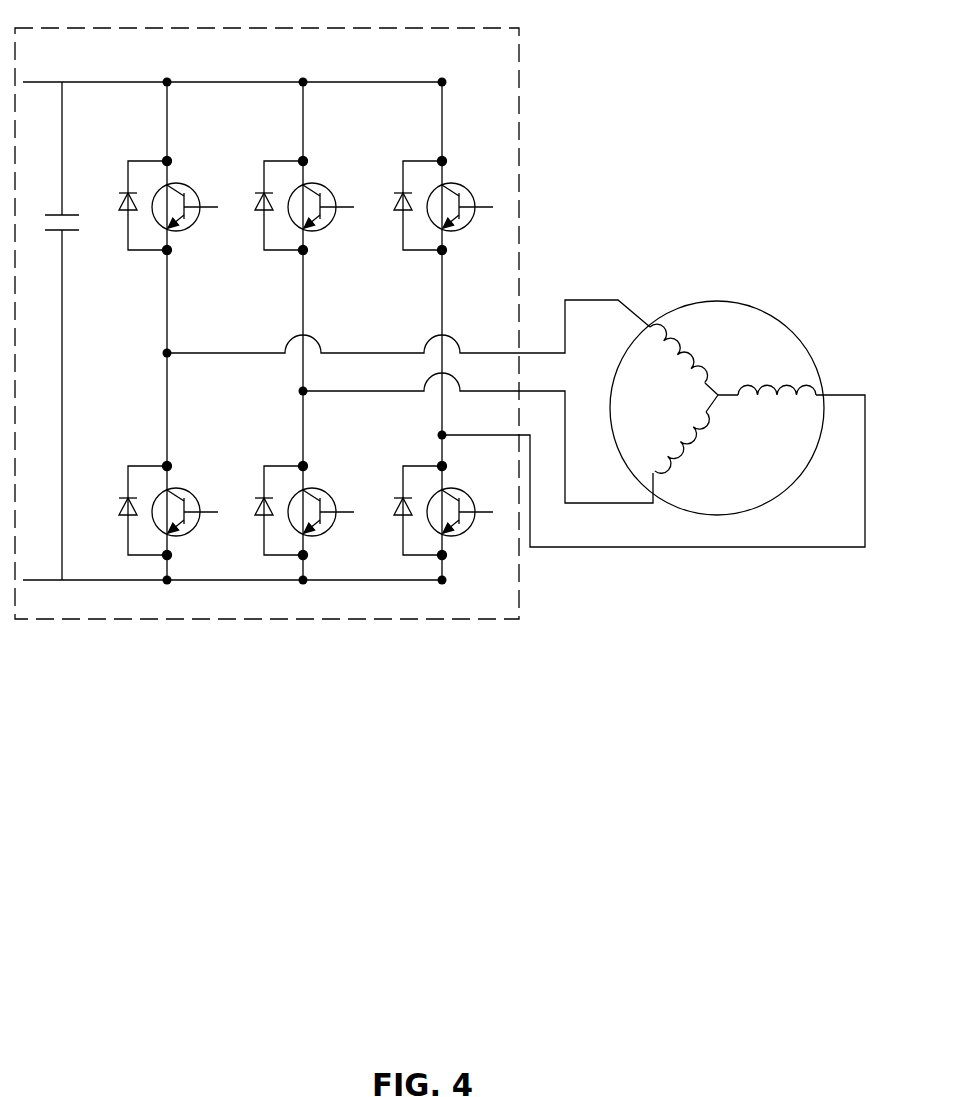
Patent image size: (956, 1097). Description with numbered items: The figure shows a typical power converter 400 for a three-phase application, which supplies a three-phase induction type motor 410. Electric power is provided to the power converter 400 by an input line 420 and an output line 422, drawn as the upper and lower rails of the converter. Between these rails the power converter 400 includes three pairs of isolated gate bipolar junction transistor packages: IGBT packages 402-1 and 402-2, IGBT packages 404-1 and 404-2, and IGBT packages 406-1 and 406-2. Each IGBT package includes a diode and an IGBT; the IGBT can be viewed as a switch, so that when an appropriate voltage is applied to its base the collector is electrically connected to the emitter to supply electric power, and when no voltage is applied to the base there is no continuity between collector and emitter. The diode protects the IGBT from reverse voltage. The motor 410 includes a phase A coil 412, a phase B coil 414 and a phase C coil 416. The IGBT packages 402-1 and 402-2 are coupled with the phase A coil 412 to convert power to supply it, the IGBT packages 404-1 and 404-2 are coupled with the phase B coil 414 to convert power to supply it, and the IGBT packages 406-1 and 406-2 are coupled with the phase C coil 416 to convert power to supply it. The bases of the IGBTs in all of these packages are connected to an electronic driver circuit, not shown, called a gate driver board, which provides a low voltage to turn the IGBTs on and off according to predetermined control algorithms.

The power converter 400 is at (480, 64).
The IGBT package 402-1 is at (148, 244).
The IGBT package 402-2 is at (136, 532).
The IGBT package 404-1 is at (284, 244).
The IGBT package 404-2 is at (272, 532).
The IGBT package 406-1 is at (423, 244).
The IGBT package 406-2 is at (411, 532).
The 3-phase induction type motor 410 is at (755, 347).
The phase A coil 412 is at (585, 300).
The phase B coil 414 is at (615, 503).
The phase C coil 416 is at (838, 395).
The input line 420 is at (36, 82).
The output line 422 is at (40, 582).